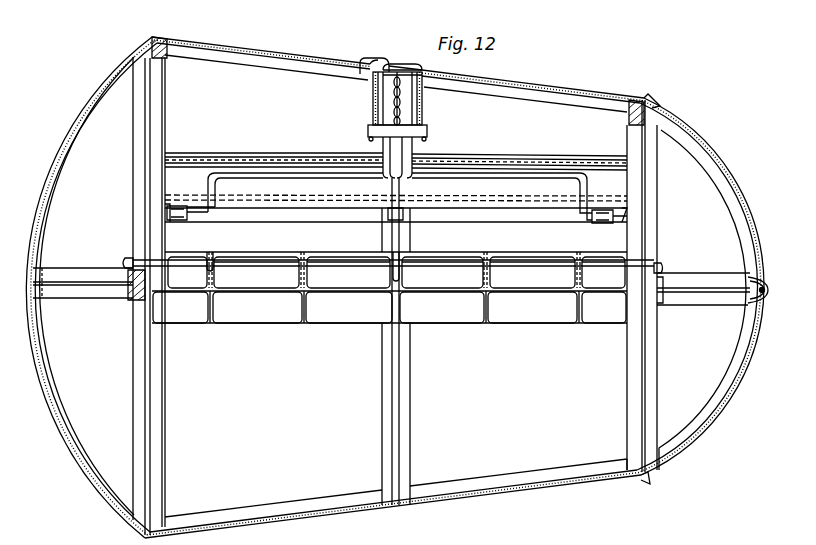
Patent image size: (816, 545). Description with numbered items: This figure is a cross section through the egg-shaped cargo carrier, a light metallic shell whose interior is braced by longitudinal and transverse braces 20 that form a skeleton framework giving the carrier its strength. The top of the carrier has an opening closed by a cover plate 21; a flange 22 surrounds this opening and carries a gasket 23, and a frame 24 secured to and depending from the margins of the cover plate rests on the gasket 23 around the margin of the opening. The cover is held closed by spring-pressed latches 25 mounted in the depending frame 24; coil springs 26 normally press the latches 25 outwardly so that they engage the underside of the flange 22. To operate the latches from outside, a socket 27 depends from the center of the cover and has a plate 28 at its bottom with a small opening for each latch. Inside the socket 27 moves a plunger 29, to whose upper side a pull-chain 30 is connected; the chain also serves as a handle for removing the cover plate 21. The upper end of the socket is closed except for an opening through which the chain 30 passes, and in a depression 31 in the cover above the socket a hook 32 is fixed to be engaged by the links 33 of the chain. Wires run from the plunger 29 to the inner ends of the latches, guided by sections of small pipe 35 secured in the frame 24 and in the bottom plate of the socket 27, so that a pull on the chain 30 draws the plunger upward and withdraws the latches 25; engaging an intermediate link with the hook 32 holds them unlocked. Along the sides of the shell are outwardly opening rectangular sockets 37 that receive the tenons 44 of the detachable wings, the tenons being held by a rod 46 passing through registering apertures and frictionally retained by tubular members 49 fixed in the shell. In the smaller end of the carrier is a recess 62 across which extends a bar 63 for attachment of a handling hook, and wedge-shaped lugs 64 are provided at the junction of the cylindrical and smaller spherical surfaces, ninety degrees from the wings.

The longitudinal and transverse braces 20 is at (77, 298).
The cover plate 21 is at (545, 94).
The flange 22 is at (292, 216).
The gasket 23 is at (160, 41).
The frame 24 is at (261, 164).
The spring-pressed latches 25 is at (165, 213).
The coil springs 26 is at (179, 219).
The socket 27 is at (373, 103).
The plate 28 is at (419, 138).
The plunger 29 is at (372, 130).
The pull-chain 30 is at (399, 108).
The depression 31 is at (408, 73).
The hook 32 is at (372, 63).
The links 33 is at (394, 69).
The sections of small pipe 35 is at (370, 180).
The sockets 37 is at (301, 278).
The tenons 44 is at (310, 278).
The rod 46 is at (127, 259).
The tubular members 49 is at (205, 264).
The recess 62 is at (767, 307).
The bar 63 is at (766, 287).
The wedge-shaped lugs 64 is at (649, 103).